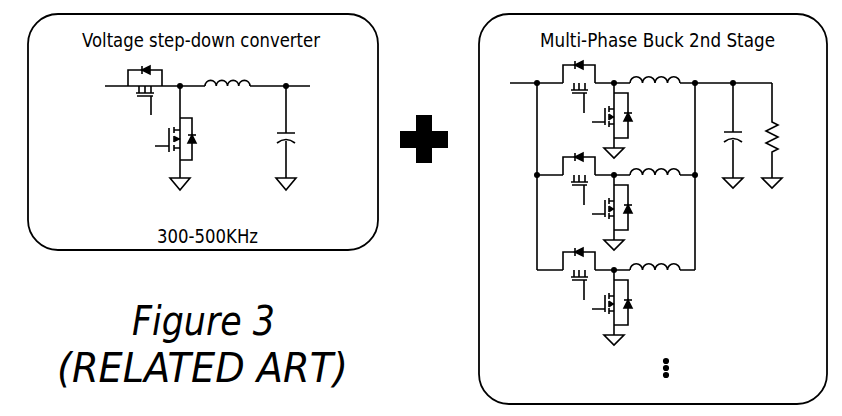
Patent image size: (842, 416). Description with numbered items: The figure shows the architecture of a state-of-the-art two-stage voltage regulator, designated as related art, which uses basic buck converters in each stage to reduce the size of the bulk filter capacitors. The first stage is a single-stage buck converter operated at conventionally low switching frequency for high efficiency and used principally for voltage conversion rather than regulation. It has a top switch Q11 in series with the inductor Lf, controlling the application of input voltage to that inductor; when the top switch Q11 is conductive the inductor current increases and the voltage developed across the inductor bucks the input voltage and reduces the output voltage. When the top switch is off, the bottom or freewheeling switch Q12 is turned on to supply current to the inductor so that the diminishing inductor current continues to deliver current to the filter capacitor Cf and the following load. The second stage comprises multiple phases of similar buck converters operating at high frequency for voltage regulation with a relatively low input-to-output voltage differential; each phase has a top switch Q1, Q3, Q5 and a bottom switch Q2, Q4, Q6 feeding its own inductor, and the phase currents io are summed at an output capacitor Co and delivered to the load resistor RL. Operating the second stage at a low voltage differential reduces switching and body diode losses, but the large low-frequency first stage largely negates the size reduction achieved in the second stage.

The top switch Q11 is at (140, 92).
The bottom or freewheeling switch Q12 is at (163, 138).
The filter inductor Lf is at (227, 97).
The filter capacitor Cf is at (296, 138).
The first phase high-side switch Q1 is at (575, 90).
The first phase low-side switch Q2 is at (605, 120).
The second phase high-side switch Q3 is at (576, 182).
The second phase low-side switch Q4 is at (606, 212).
The third phase high-side switch Q5 is at (576, 277).
The third phase low-side switch Q6 is at (607, 307).
The output capacitor Co is at (720, 135).
The load resistor RL is at (764, 135).
The output current io is at (660, 93).